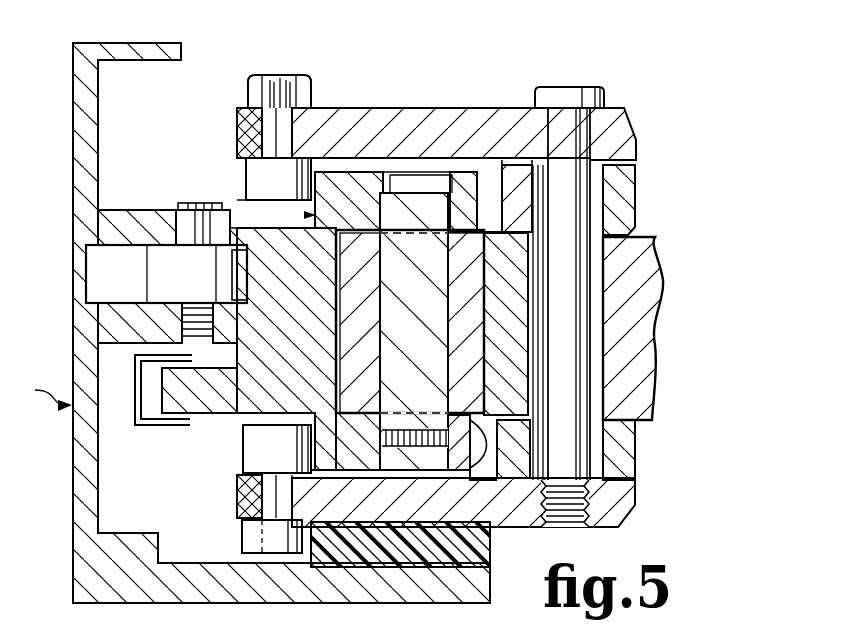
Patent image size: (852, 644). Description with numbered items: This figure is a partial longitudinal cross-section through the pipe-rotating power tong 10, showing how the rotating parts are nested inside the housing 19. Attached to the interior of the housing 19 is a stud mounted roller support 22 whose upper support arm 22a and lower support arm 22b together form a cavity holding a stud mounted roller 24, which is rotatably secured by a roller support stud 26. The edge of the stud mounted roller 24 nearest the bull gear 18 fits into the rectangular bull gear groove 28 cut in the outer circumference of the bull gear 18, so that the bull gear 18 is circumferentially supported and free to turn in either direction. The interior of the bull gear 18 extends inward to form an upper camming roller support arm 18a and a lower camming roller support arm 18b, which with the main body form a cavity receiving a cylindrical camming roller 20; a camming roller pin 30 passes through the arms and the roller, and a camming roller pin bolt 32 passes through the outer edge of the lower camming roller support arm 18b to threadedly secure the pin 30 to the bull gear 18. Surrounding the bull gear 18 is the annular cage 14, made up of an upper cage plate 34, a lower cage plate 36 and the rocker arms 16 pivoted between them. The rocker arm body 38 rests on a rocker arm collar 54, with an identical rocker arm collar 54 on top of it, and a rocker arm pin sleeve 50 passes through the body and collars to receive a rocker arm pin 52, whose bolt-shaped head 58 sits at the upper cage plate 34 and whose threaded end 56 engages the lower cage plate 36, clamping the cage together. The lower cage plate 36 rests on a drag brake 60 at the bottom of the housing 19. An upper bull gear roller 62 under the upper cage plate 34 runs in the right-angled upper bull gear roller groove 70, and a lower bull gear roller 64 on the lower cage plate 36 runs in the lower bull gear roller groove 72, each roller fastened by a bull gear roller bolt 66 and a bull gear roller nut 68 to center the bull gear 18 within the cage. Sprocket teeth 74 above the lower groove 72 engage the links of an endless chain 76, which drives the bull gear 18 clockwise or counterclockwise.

The pipe-rotating power tong 10 is at (40, 394).
The annular cage 14 is at (438, 107).
The pipe-gripping rocker arm 16 is at (668, 255).
The bull gear 18 is at (363, 195).
The upper camming roller support arm 18a is at (477, 192).
The lower camming roller support arm 18b is at (510, 478).
The housing 19 is at (82, 100).
The camming roller 20 is at (410, 321).
The stud mounted roller support 22 is at (122, 210).
The upper support arm 22a is at (163, 210).
The lower support arm 22b is at (107, 300).
The stud mounted roller 24 is at (168, 283).
The roller support stud 26 is at (200, 205).
The bull gear groove 28 is at (234, 278).
The camming roller pin 30 is at (414, 331).
The camming roller pin bolt 32 is at (410, 424).
The upper cage plate 34 is at (328, 122).
The lower cage plate 36 is at (408, 505).
The rocker arm body 38 is at (625, 375).
The rocker arm pin sleeve 50 is at (596, 438).
The rocker arm pin 52 is at (560, 325).
The rocker arm collar 54 is at (620, 185).
The threaded end 56 is at (580, 490).
The bolt-shaped head 58 is at (570, 95).
The drag brake 60 is at (376, 545).
The upper bull gear roller 62 is at (267, 177).
The lower bull gear roller 64 is at (267, 448).
The bull gear roller bolt 66 is at (273, 137).
The bull gear roller nut 68 is at (282, 88).
The upper bull gear roller groove 70 is at (306, 215).
The lower bull gear roller groove 72 is at (300, 420).
The sprocket teeth 74 is at (183, 403).
The endless chain 76 is at (132, 412).